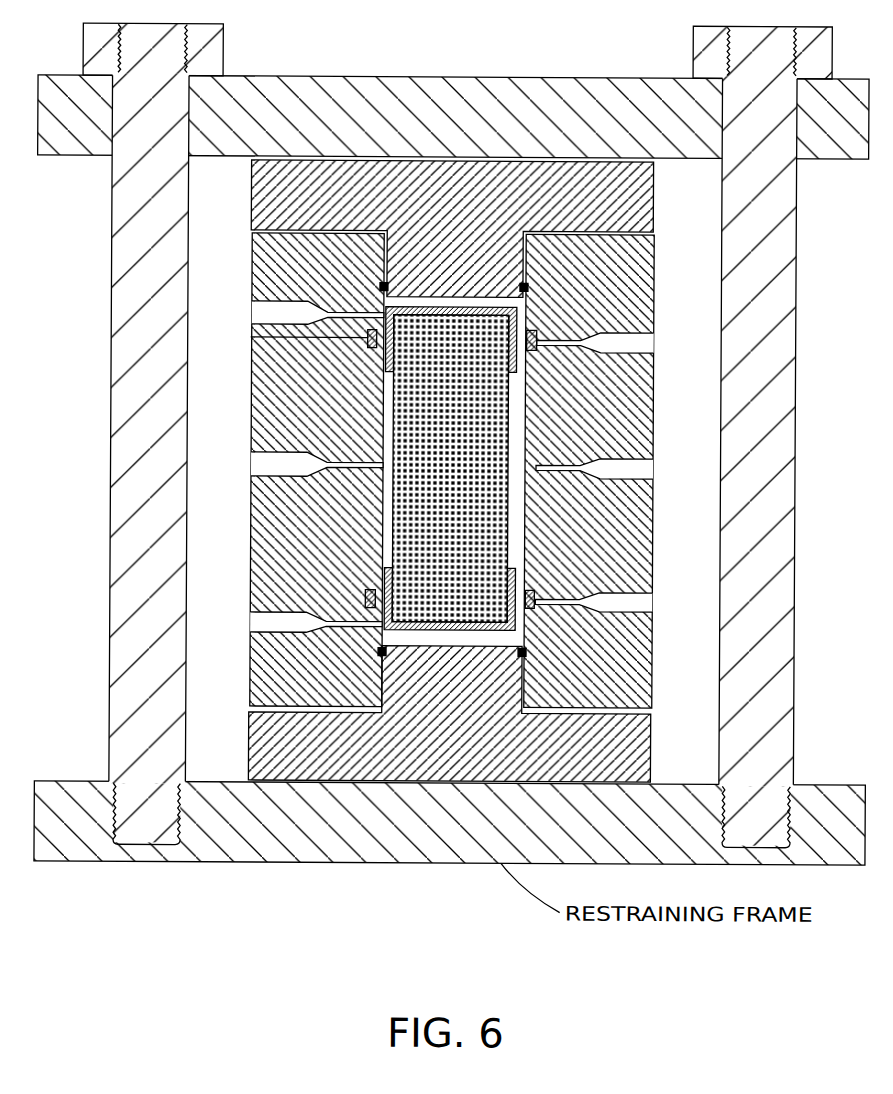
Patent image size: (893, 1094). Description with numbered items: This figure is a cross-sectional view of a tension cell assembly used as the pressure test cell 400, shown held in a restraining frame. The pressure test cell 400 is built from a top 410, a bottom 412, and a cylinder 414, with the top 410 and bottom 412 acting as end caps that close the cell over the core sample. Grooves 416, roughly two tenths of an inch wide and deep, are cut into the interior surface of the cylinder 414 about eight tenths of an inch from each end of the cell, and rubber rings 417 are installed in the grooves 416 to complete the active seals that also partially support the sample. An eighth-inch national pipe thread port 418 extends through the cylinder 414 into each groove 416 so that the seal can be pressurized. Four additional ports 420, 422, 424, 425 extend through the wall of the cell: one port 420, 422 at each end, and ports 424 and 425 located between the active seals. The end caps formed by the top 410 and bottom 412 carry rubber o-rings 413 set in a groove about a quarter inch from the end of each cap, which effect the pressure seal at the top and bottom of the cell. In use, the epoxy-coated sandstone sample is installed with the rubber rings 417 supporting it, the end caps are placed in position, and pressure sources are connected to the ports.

The pressure test cell 400 is at (452, 471).
The top 410 is at (640, 196).
The bottom 412 is at (628, 760).
The rubber o-rings 413 is at (525, 287).
The cylinder 414 is at (632, 667).
The grooves 416 is at (370, 349).
The rubber rings 417 is at (250, 338).
The NPT port 418 is at (643, 343).
The port 420 is at (252, 314).
The port 422 is at (260, 623).
The port 424 is at (260, 470).
The port 425 is at (642, 470).